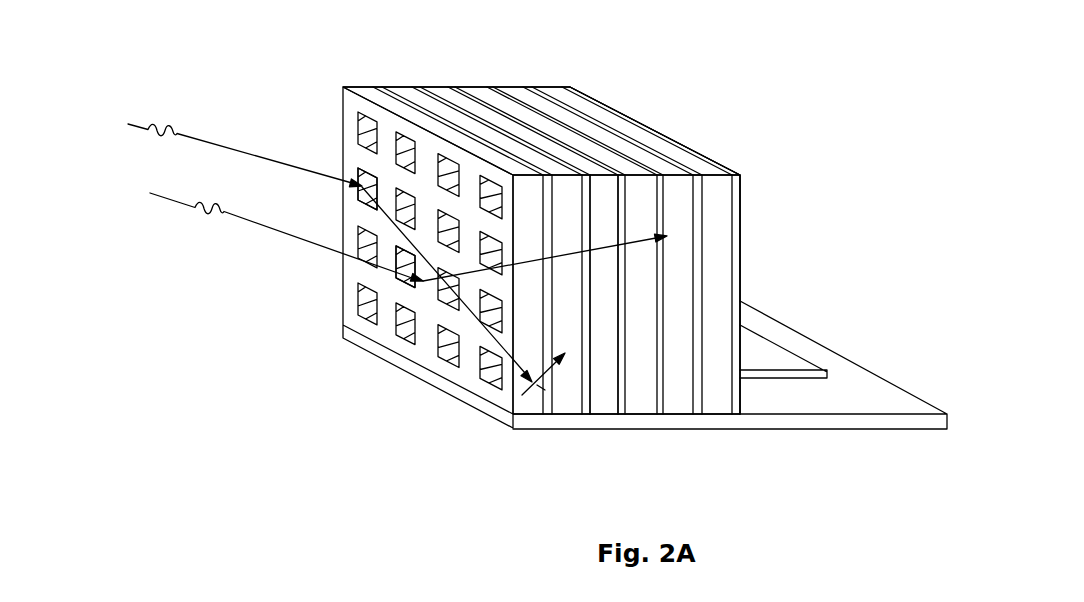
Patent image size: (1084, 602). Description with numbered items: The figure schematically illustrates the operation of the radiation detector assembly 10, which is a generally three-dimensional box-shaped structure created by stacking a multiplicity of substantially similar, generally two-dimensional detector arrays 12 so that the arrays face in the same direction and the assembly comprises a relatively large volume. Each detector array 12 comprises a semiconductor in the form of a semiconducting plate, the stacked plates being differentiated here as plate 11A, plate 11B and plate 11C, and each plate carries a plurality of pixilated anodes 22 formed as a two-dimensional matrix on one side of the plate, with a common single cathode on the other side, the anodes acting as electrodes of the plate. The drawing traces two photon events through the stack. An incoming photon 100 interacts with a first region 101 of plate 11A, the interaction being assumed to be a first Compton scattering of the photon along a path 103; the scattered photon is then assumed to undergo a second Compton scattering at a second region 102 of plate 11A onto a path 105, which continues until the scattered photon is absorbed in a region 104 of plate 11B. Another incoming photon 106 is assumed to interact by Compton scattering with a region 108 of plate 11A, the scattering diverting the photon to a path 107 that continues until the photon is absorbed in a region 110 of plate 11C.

The radiation detector assembly 10 is at (720, 117).
The semiconducting plate 11A is at (368, 86).
The semiconducting plate 11B is at (405, 85).
The semiconducting plate 11C is at (683, 408).
The detector array 12 is at (546, 87).
The pixilated anodes 22 is at (354, 117).
The incoming photon 100 is at (150, 130).
The first region 101 is at (366, 185).
The second region 102 is at (522, 395).
The path 103 is at (402, 232).
The region 104 is at (560, 354).
The path 105 is at (537, 385).
The incoming photon 106 is at (160, 196).
The path 107 is at (606, 208).
The region 108 is at (426, 284).
The region 110 is at (669, 236).